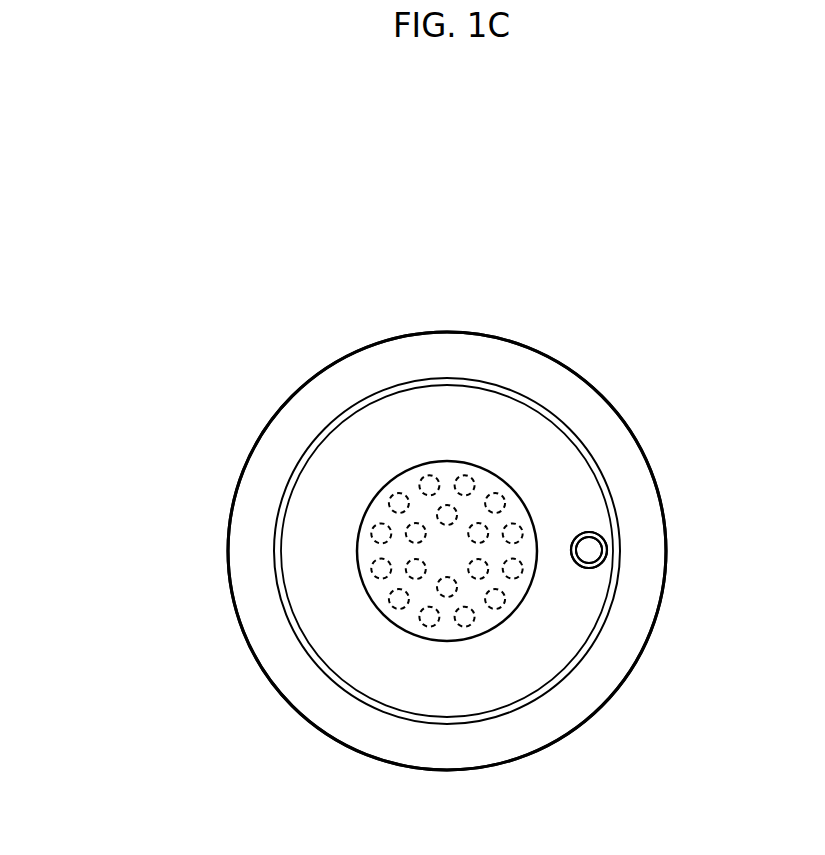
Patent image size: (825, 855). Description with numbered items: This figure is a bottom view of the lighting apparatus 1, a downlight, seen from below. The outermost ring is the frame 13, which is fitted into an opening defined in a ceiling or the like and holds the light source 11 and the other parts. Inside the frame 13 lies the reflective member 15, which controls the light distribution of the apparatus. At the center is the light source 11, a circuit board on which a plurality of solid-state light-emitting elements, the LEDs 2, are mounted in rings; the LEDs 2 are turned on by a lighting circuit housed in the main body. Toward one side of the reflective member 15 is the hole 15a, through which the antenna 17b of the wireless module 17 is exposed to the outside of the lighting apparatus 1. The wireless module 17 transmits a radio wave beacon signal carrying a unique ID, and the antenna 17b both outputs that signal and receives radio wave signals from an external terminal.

The lighting apparatus 1 is at (151, 356).
The LEDs 2 is at (516, 525).
The light source 11 is at (370, 551).
The frame 13 is at (290, 700).
The reflective member 15 is at (550, 650).
The hole 15a is at (590, 568).
The antenna 17b is at (588, 553).
The wireless module 17 is at (589, 550).